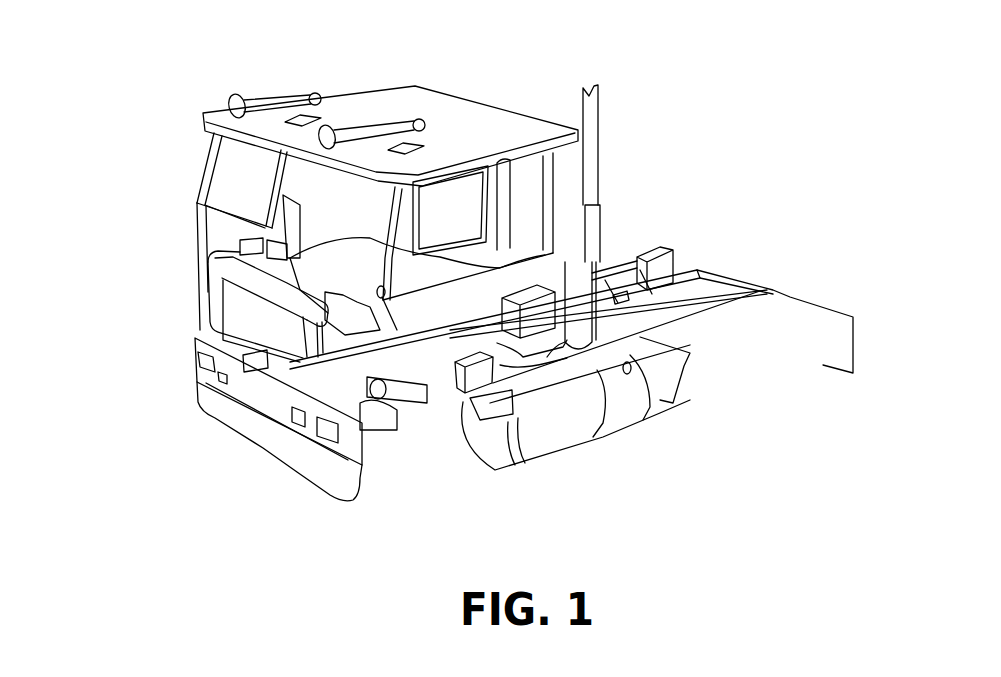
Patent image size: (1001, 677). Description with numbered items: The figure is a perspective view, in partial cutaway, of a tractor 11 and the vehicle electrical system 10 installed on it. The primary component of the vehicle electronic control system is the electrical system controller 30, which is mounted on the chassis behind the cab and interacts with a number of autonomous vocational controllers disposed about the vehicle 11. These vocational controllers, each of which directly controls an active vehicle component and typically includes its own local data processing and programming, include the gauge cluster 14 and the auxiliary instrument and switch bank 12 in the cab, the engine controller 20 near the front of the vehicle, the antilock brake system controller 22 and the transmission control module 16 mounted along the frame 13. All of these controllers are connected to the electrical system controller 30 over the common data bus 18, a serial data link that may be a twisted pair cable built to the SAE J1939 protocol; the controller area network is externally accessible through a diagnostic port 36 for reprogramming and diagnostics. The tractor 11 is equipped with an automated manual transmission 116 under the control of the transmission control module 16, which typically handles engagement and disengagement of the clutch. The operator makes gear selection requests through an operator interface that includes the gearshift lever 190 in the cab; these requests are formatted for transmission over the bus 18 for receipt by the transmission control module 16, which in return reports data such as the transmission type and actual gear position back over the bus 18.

The vehicle electrical system 10 is at (411, 432).
The tractor 11 is at (499, 101).
The auxiliary instrument and switch bank 12 is at (265, 178).
The frame 13 is at (775, 287).
The gauge cluster 14 is at (238, 262).
The transmission control module 16 is at (507, 427).
The data bus 18 is at (208, 312).
The engine controller 20 is at (380, 357).
The antilock brake system controller 22 is at (455, 405).
The electrical system controller 30 is at (557, 300).
The diagnostic port 36 is at (212, 416).
The automated manual transmission 116 is at (418, 305).
The gearshift lever 190 is at (389, 297).